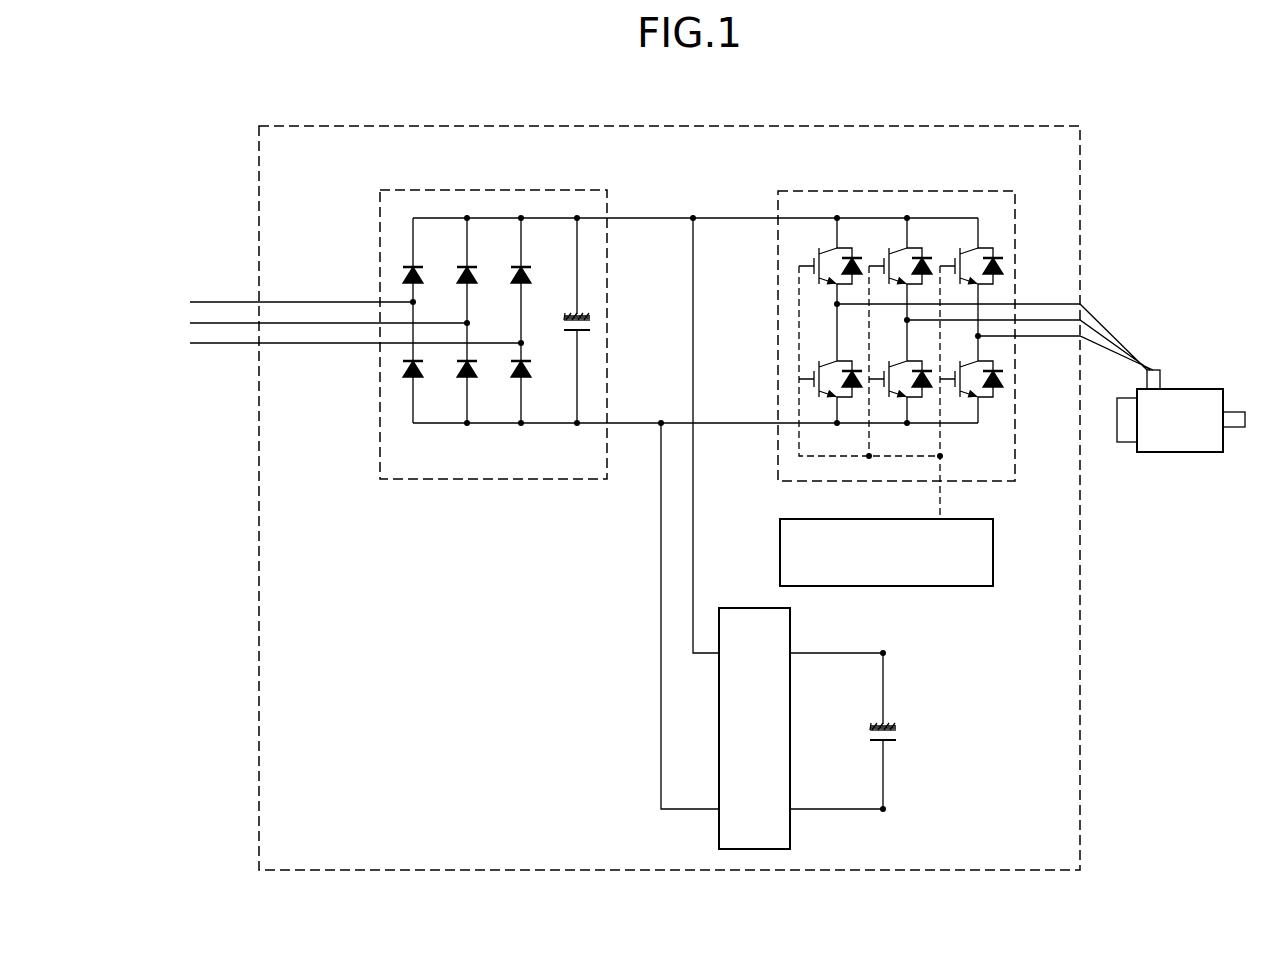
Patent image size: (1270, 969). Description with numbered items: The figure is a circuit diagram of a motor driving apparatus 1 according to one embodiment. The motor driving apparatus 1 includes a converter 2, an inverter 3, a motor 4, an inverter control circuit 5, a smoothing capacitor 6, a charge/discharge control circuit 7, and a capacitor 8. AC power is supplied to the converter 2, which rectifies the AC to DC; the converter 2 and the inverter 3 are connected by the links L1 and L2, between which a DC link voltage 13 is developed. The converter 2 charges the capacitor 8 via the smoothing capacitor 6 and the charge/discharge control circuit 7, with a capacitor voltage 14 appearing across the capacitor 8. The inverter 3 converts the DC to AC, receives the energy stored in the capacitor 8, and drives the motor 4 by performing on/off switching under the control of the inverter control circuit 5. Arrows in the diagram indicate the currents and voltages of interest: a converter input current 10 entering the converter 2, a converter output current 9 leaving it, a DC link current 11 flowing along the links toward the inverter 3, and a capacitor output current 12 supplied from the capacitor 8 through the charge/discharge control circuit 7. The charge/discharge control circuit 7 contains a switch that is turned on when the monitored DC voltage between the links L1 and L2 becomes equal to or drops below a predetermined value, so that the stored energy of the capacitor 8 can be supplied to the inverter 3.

The motor driving apparatus 1 is at (306, 118).
The converter 2 is at (468, 183).
The inverter 3 is at (887, 184).
The motor 4 is at (1185, 389).
The inverter control circuit 5 is at (968, 588).
The smoothing capacitor 6 is at (573, 333).
The charge/discharge control circuit 7 is at (748, 607).
The capacitor 8 is at (873, 743).
The converter output current 9 is at (672, 198).
The converter input current 10 is at (340, 283).
The DC link current 11 is at (755, 198).
The capacitor output current 12 is at (744, 232).
The DC link voltage 13 is at (619, 235).
The capacitor voltage 14 is at (909, 662).
The link L1 is at (690, 222).
The link L2 is at (658, 430).